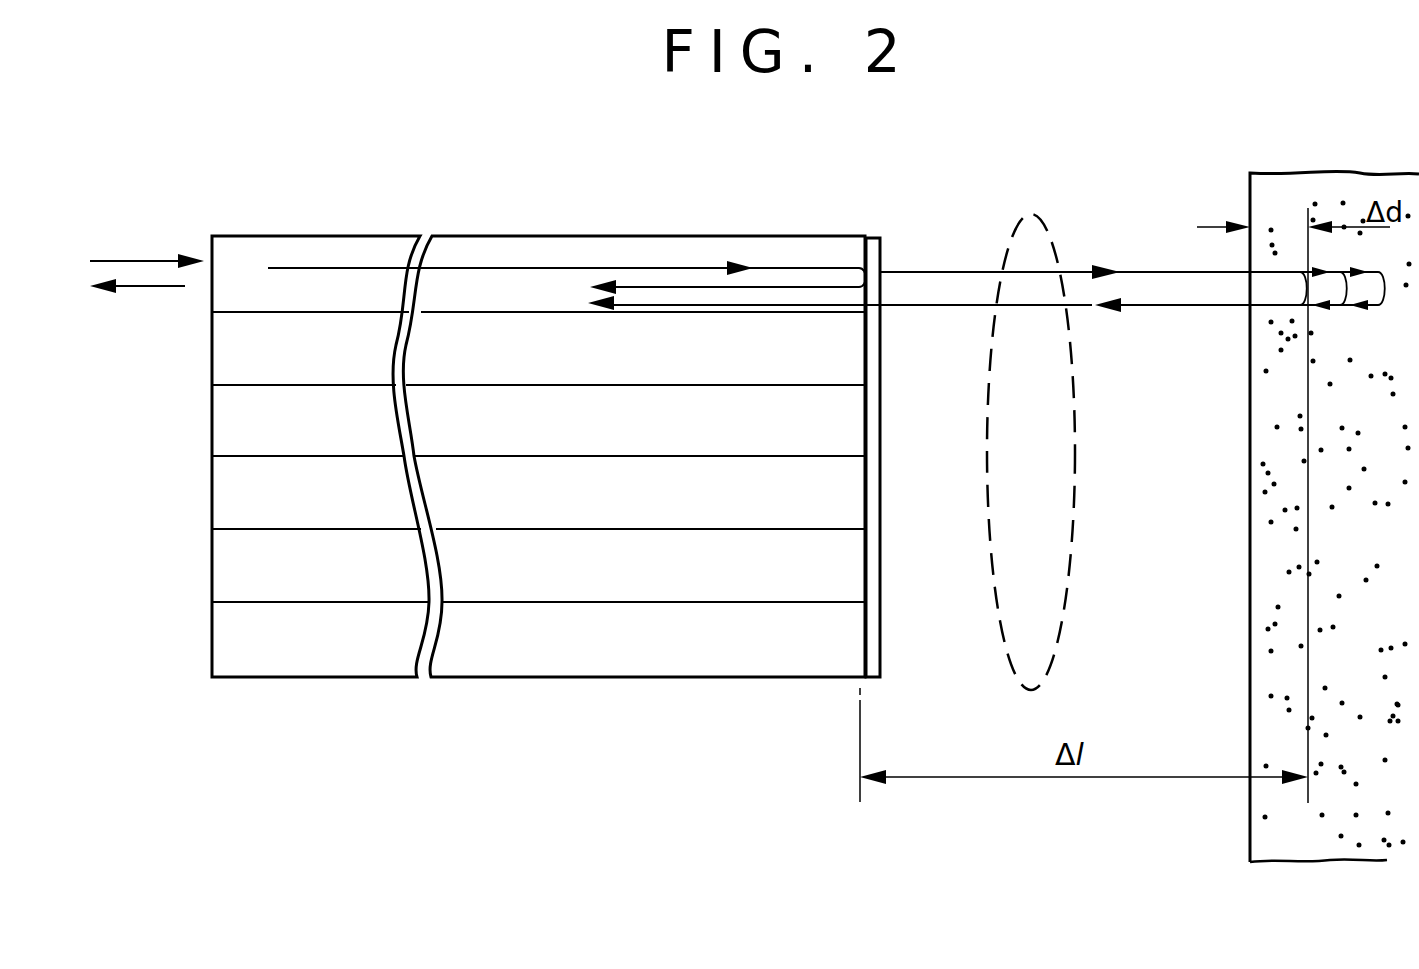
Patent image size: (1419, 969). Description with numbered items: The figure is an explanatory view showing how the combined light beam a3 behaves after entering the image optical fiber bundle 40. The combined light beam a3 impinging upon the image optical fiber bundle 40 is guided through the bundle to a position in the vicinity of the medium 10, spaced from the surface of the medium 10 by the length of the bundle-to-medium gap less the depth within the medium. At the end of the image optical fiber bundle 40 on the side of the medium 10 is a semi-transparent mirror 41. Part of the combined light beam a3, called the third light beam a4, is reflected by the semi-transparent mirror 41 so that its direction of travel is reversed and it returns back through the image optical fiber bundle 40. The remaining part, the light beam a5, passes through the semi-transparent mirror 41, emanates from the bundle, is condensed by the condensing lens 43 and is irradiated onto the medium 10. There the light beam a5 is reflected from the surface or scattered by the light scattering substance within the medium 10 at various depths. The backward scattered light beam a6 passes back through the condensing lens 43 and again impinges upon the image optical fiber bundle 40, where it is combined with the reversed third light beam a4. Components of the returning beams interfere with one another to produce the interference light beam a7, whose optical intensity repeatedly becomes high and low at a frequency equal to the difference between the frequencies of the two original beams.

The medium 10 is at (1286, 196).
The image optical fiber bundle 40 is at (568, 212).
The semi-transparent mirror 41 is at (874, 237).
The condensing lens 43 is at (1040, 243).
The combined light beam a3 is at (150, 257).
The third light beam a4 is at (647, 293).
The light beam a5 is at (948, 268).
The backward scattered light beam a6 is at (745, 306).
The interference light beam a7 is at (149, 290).